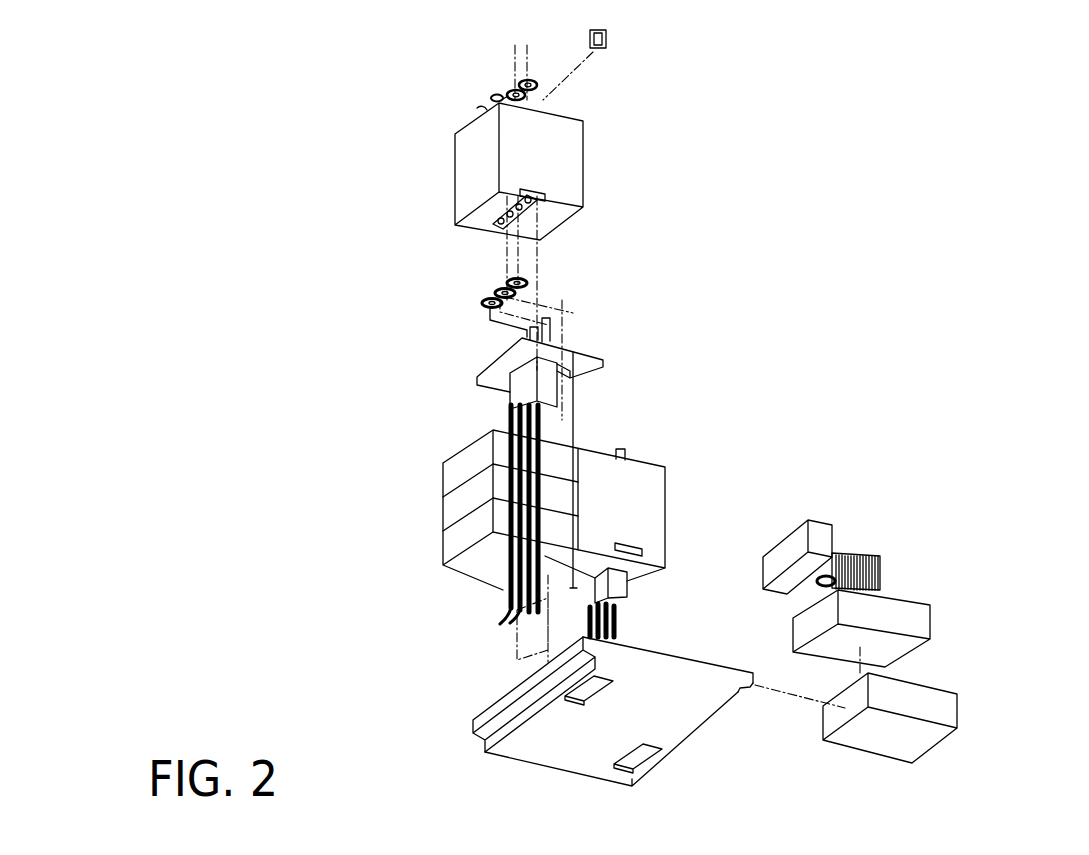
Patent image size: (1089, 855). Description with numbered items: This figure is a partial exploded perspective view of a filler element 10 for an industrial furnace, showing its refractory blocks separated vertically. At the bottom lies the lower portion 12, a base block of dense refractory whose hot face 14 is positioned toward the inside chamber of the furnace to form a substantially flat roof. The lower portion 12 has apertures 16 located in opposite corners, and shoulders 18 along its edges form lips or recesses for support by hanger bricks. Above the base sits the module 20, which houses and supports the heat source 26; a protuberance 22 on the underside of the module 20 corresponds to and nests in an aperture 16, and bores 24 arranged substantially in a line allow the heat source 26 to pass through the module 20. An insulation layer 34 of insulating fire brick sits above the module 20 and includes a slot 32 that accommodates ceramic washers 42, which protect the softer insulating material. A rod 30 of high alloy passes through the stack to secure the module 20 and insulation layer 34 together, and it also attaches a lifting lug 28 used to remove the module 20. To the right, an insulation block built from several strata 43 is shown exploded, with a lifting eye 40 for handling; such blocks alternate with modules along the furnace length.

The filler element 10 is at (782, 268).
The lower portion 12 is at (668, 668).
The hot face 14 is at (685, 722).
The aperture 16 is at (592, 690).
The shoulder 18 is at (485, 741).
The module 20 is at (590, 358).
The protuberance 22 is at (510, 393).
The bore 24 is at (522, 200).
The heat source 26 is at (507, 603).
The lifting lug 28 is at (480, 112).
The rod 30 is at (510, 478).
The slot 32 is at (545, 195).
The insulation layer 34 is at (583, 153).
The lifting eye 40 is at (838, 548).
The washer 42 is at (515, 80).
The strata 43 is at (447, 482).